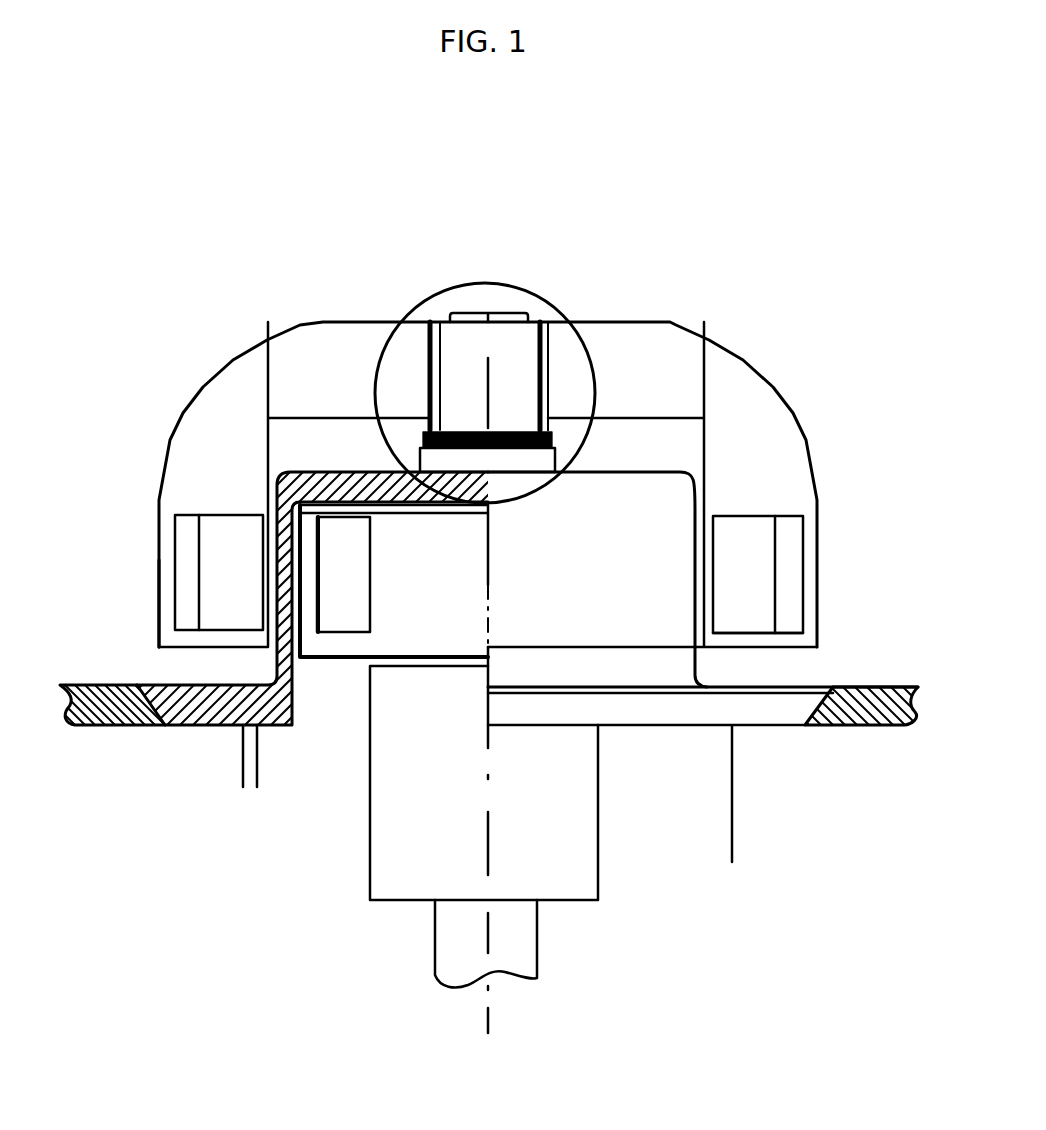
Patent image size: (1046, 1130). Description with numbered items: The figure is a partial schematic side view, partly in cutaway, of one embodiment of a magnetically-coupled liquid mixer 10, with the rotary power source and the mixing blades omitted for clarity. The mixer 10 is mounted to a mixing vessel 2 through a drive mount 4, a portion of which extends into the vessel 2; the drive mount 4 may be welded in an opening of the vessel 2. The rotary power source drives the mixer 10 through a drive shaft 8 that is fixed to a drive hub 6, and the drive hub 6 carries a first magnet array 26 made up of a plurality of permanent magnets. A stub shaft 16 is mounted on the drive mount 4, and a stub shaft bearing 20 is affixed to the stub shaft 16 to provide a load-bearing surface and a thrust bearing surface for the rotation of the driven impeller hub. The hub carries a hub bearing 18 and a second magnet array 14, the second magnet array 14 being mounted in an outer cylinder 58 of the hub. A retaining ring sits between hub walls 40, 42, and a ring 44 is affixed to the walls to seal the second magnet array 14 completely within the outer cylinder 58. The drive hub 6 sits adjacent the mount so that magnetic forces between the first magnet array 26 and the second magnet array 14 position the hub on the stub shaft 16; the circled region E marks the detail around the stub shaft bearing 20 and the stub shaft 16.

The mixing vessel 2 is at (95, 712).
The drive mount 4 is at (302, 482).
The drive hub 6 is at (395, 817).
The drive shaft 8 is at (460, 940).
The magnetically-coupled liquid mixer 10 is at (779, 308).
The second magnet array 14 is at (212, 541).
The stub shaft 16 is at (463, 350).
The hub bearing 18 is at (548, 352).
The stub shaft bearing 20 is at (428, 422).
The first magnet array 26 is at (332, 537).
The hub wall 40 is at (810, 570).
The hub wall 42 is at (707, 580).
The ring 44 is at (770, 640).
The outer cylinder 58 is at (162, 592).
The detail region E is at (537, 297).